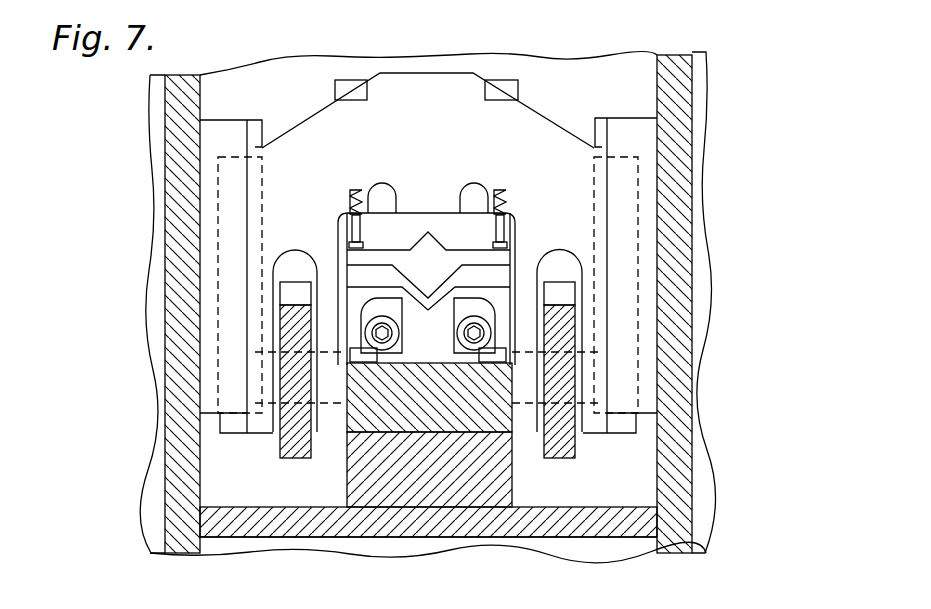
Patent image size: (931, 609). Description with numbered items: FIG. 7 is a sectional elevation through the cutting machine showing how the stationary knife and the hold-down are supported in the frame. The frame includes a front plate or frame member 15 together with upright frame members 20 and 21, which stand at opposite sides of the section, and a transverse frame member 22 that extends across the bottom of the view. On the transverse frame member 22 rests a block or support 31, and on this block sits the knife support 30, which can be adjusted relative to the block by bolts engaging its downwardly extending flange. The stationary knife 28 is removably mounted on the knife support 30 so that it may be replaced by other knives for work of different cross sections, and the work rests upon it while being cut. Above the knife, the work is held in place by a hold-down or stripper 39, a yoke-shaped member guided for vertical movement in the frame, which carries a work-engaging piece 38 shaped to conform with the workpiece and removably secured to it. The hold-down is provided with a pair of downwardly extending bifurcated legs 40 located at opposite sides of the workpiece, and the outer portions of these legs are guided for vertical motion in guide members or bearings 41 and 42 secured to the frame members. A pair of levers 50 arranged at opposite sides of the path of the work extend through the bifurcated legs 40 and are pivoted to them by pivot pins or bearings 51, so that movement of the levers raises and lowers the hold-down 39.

The front plate or frame member 15 is at (312, 68).
The hold-down or stripper 39 is at (438, 85).
The upright frame member 21 is at (180, 150).
The upright frame member 20 is at (690, 148).
The guide member or bearing 41 is at (232, 213).
The guide member or bearing 42 is at (645, 212).
The bifurcated legs 40 is at (297, 250).
The levers 50 is at (300, 456).
The pivot pins or bearings 51 is at (300, 355).
The work-engaging piece 38 is at (404, 218).
The stationary knife 28 is at (470, 278).
The knife support 30 is at (436, 364).
The block or support 31 is at (425, 540).
The transverse frame member 22 is at (508, 543).